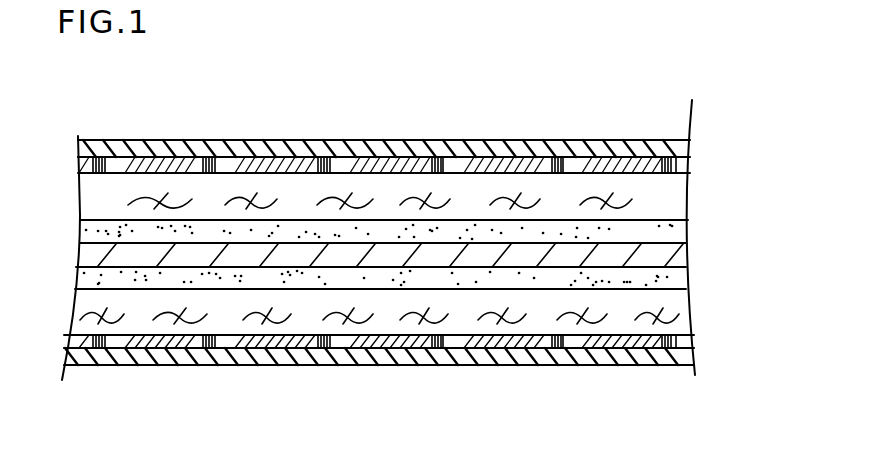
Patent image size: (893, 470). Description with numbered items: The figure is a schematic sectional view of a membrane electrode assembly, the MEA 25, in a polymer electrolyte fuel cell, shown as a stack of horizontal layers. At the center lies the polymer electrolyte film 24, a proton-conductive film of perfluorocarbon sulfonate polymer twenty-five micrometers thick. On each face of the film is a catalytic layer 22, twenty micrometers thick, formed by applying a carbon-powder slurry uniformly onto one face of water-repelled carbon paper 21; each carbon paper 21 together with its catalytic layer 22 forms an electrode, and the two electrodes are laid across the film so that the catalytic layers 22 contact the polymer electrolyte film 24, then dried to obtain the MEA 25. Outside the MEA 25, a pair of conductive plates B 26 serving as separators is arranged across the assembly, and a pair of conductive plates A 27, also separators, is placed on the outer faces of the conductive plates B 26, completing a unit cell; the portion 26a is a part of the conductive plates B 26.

The water-repelled carbon paper 21 is at (672, 208).
The catalytic layer 22 is at (685, 228).
The polymer electrolyte film 24 is at (685, 253).
The MEA 25 is at (768, 147).
The conductive plates B 26 is at (495, 160).
The wiring pattern portion 26a is at (354, 164).
The conductive plates A 27 is at (585, 150).